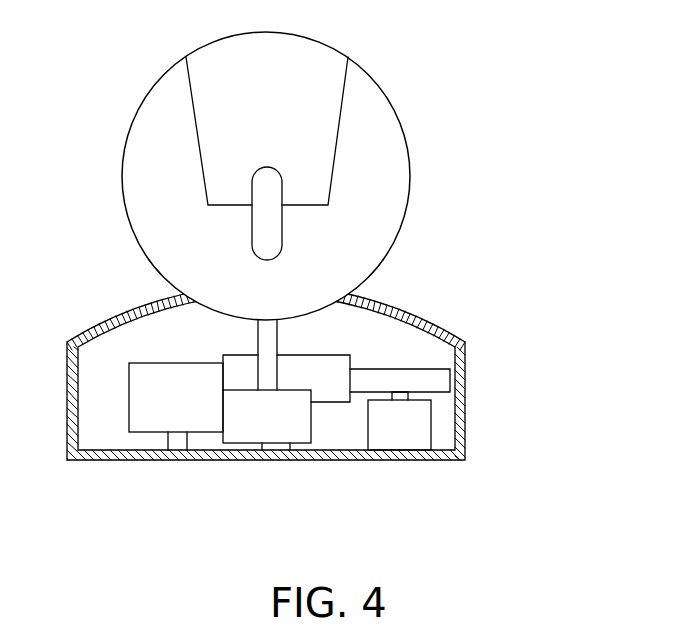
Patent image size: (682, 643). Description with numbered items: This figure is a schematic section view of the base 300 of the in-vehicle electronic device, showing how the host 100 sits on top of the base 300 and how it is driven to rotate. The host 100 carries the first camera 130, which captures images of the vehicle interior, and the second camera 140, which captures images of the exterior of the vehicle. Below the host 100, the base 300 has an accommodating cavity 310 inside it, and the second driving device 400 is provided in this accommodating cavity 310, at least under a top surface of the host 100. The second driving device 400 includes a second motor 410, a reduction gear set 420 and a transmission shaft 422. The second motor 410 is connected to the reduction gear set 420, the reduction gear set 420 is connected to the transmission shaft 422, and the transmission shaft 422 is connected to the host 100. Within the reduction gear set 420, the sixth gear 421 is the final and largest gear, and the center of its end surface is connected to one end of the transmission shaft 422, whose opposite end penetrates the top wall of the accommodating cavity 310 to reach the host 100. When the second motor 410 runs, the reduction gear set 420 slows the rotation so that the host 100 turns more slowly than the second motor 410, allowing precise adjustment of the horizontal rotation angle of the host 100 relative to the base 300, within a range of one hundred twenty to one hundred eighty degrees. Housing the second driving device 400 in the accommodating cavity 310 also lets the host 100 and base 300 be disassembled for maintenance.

The host 100 is at (363, 177).
The first camera 130 is at (292, 102).
The second camera 140 is at (268, 227).
The base 300 is at (427, 318).
The accommodating cavity 310 is at (157, 342).
The second driving device 400 is at (491, 405).
The second motor 410 is at (402, 427).
The reduction gear set 420 is at (357, 387).
The sixth gear 421 is at (245, 425).
The transmission shaft 422 is at (268, 368).